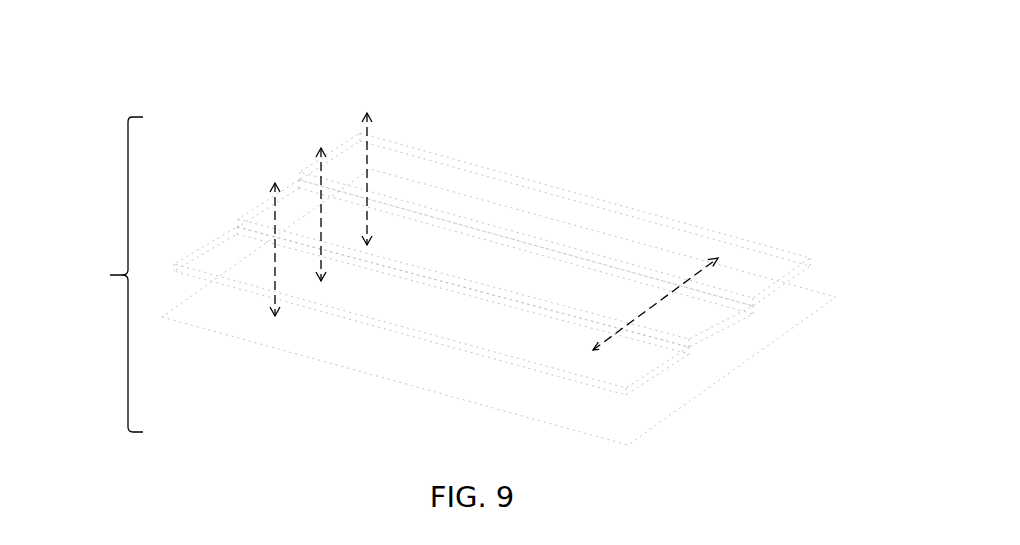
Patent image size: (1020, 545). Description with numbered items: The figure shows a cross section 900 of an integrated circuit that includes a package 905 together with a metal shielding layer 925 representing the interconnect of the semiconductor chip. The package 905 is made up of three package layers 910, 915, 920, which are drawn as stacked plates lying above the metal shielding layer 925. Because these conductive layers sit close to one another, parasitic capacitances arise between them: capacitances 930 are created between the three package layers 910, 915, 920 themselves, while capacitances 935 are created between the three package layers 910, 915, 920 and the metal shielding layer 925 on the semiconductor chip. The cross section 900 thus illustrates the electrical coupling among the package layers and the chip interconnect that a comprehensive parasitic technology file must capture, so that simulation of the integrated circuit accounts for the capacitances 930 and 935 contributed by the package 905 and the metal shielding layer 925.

The cross section 900 is at (178, 101).
The package 905 is at (105, 274).
The package layer 910 is at (575, 193).
The package layer 915 is at (463, 250).
The package layer 920 is at (423, 332).
The metal shielding layer 925 is at (632, 432).
The capacitances 930 is at (672, 293).
The capacitances 935 is at (320, 146).